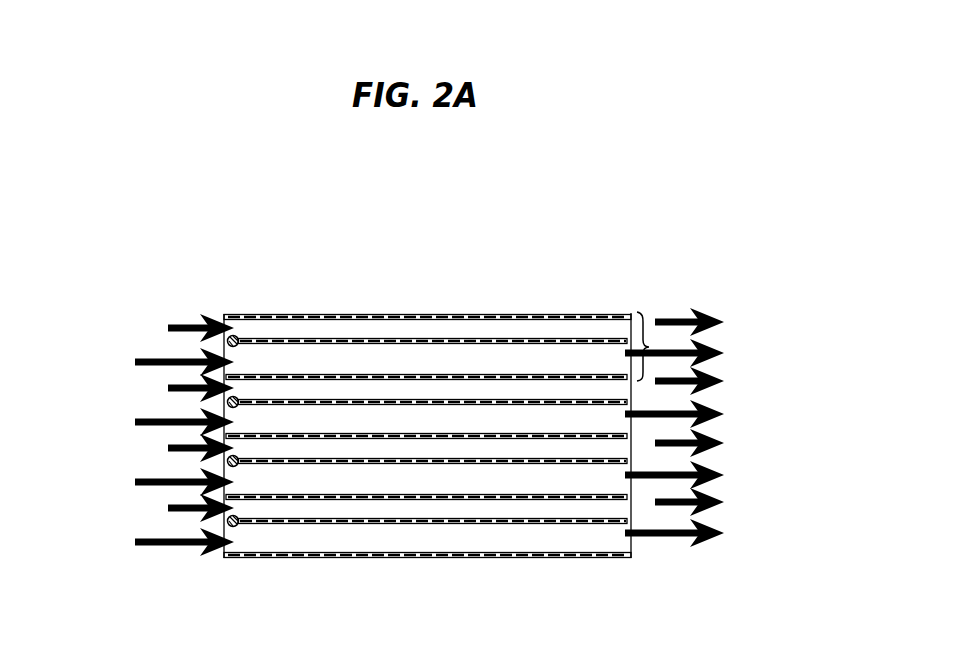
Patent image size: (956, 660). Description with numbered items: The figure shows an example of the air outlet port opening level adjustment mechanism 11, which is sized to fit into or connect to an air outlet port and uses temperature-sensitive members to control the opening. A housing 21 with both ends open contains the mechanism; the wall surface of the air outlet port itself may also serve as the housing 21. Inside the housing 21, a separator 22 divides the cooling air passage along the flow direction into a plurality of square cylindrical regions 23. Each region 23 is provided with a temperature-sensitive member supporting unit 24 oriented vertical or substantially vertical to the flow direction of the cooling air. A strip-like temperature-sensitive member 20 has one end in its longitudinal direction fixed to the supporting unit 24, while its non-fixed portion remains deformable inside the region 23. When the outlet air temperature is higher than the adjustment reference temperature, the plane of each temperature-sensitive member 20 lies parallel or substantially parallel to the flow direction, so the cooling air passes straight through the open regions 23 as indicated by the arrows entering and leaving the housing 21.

The air outlet port opening level adjustment mechanism 11 is at (646, 208).
The temperature-sensitive member 20 is at (607, 338).
The housing 21 is at (576, 314).
The separator 22 is at (325, 374).
The regions 23 is at (655, 322).
The temperature-sensitive member supporting unit 24 is at (234, 335).